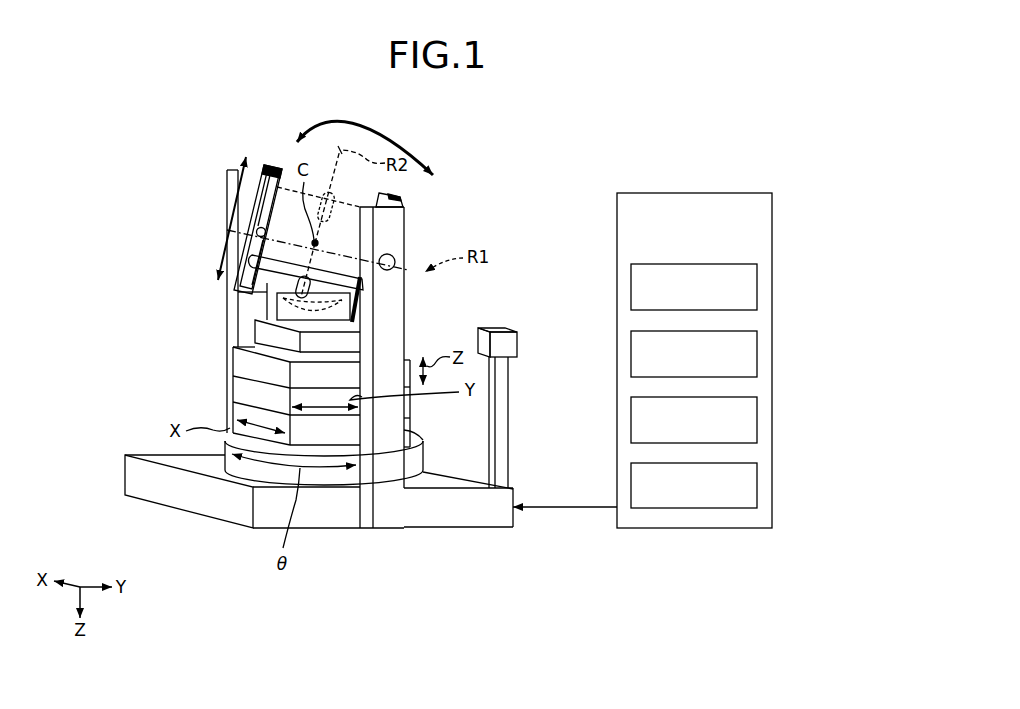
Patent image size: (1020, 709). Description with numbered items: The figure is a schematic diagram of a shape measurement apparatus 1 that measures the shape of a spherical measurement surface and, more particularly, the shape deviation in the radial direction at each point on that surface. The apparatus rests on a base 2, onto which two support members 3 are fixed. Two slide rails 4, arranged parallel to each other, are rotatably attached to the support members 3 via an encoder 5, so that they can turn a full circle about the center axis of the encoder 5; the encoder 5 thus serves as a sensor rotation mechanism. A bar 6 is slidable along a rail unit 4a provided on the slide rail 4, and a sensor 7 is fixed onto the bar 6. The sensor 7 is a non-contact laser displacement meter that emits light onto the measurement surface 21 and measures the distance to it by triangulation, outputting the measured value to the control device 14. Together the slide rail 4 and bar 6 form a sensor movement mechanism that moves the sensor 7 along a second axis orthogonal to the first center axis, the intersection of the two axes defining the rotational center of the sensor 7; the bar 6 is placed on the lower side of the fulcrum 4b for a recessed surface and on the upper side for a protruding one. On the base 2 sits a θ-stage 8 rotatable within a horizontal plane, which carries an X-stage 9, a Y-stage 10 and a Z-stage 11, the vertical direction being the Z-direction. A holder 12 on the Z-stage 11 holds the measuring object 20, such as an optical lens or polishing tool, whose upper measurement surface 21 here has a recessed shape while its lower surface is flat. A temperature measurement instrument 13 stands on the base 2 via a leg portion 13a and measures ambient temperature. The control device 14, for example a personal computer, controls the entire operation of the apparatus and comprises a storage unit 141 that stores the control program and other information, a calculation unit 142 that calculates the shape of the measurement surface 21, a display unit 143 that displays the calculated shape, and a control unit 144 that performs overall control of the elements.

The shape measurement apparatus 1 is at (477, 122).
The base 2 is at (165, 493).
The support member 3 is at (235, 178).
The slide rail 4 is at (270, 162).
The rail unit 4a is at (280, 163).
The fulcrum 4b is at (256, 235).
The encoder 5 is at (397, 258).
The bar 6 is at (323, 271).
The sensor 7 is at (228, 290).
The θ-stage 8 is at (237, 468).
The X-stage 9 is at (242, 407).
The Y-stage 10 is at (242, 385).
The Z-stage 11 is at (242, 357).
The holder 12 is at (267, 332).
The temperature measurement instrument 13 is at (502, 334).
The leg portion 13a is at (503, 387).
The control device 14 is at (772, 222).
The measuring object 20 is at (283, 313).
The measurement surface 21 is at (355, 311).
The storage unit 141 is at (757, 287).
The calculation unit 142 is at (757, 350).
The display unit 143 is at (757, 417).
The control unit 144 is at (757, 484).